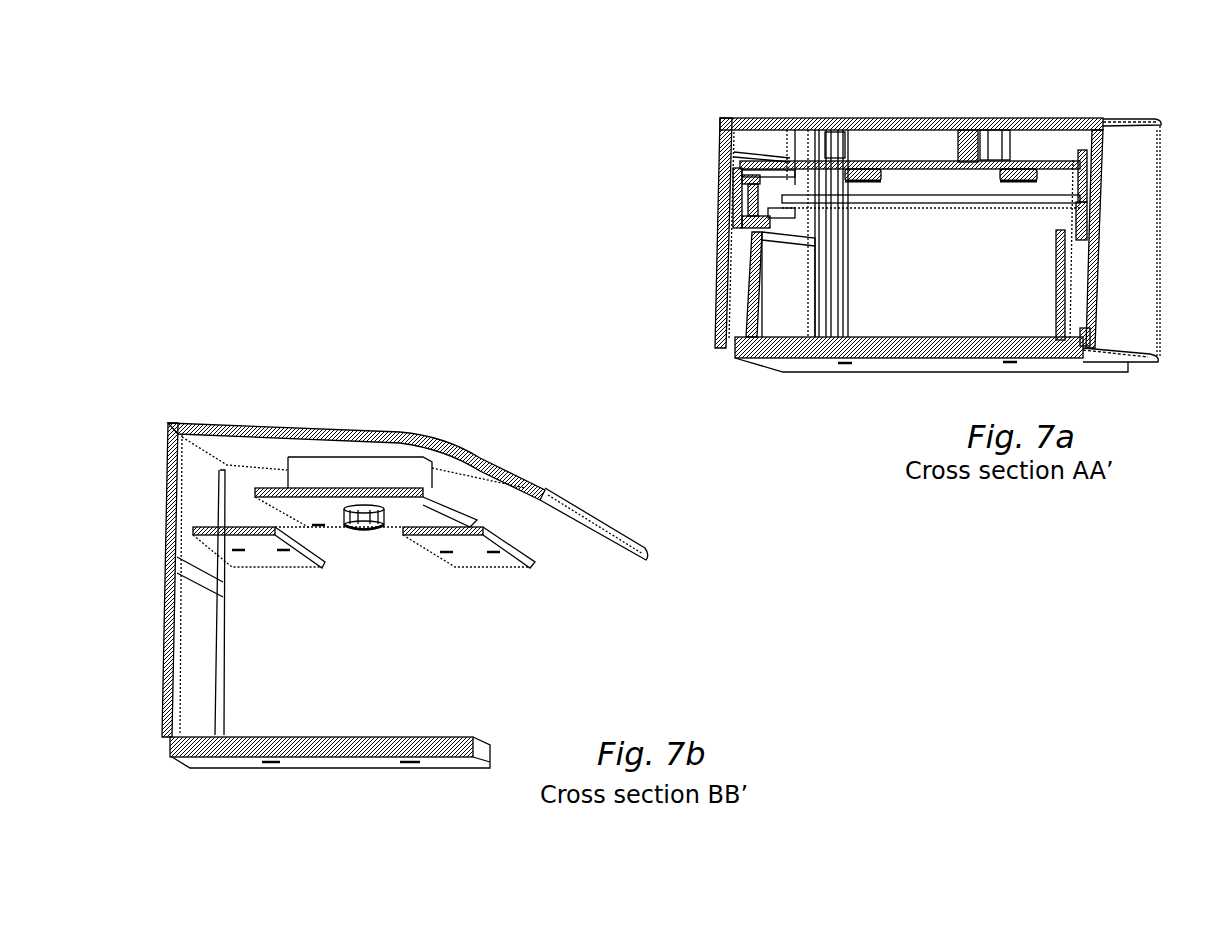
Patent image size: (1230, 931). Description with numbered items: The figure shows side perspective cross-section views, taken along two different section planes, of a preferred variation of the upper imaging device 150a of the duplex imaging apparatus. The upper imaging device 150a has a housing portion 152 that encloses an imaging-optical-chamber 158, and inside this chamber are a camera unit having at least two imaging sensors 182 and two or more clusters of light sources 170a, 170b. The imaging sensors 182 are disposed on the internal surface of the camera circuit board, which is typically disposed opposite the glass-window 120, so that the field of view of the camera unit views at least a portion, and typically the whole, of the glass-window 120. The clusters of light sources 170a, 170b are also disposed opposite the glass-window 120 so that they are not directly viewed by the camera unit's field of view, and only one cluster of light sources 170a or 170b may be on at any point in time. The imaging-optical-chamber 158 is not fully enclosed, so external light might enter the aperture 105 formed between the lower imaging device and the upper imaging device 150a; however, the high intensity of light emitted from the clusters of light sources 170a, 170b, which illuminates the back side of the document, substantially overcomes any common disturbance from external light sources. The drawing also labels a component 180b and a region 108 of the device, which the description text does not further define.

In FIG. 7A, the aperture 105 is at (703, 345).
In FIG. 7B, the aperture 105 is at (152, 580).
In FIG. 7A, the cavity 108 is at (970, 311).
In FIG. 7A, the glass-window 120 is at (805, 362).
In FIG. 7B, the glass-window 120 is at (400, 737).
In FIG. 7A, the upper imaging device 150a is at (687, 120).
In FIG. 7B, the upper imaging device 150a is at (410, 376).
In FIG. 7A, the housing portion 152 is at (1132, 123).
In FIG. 7B, the housing portion 152 is at (310, 425).
In FIG. 7A, the imaging-optical-chamber 158 is at (1060, 145).
In FIG. 7B, the imaging-optical-chamber 158 is at (240, 507).
In FIG. 7A, the cluster of light sources 170a is at (950, 195).
In FIG. 7B, the cluster of light sources 170a is at (223, 523).
In FIG. 7B, the cluster of light sources 170b is at (525, 548).
In FIG. 7A, the shelf 180b is at (898, 161).
In FIG. 7B, the shelf 180b is at (268, 487).
In FIG. 7A, the imaging sensor 182 is at (856, 169).
In FIG. 7B, the imaging sensor 182 is at (365, 530).